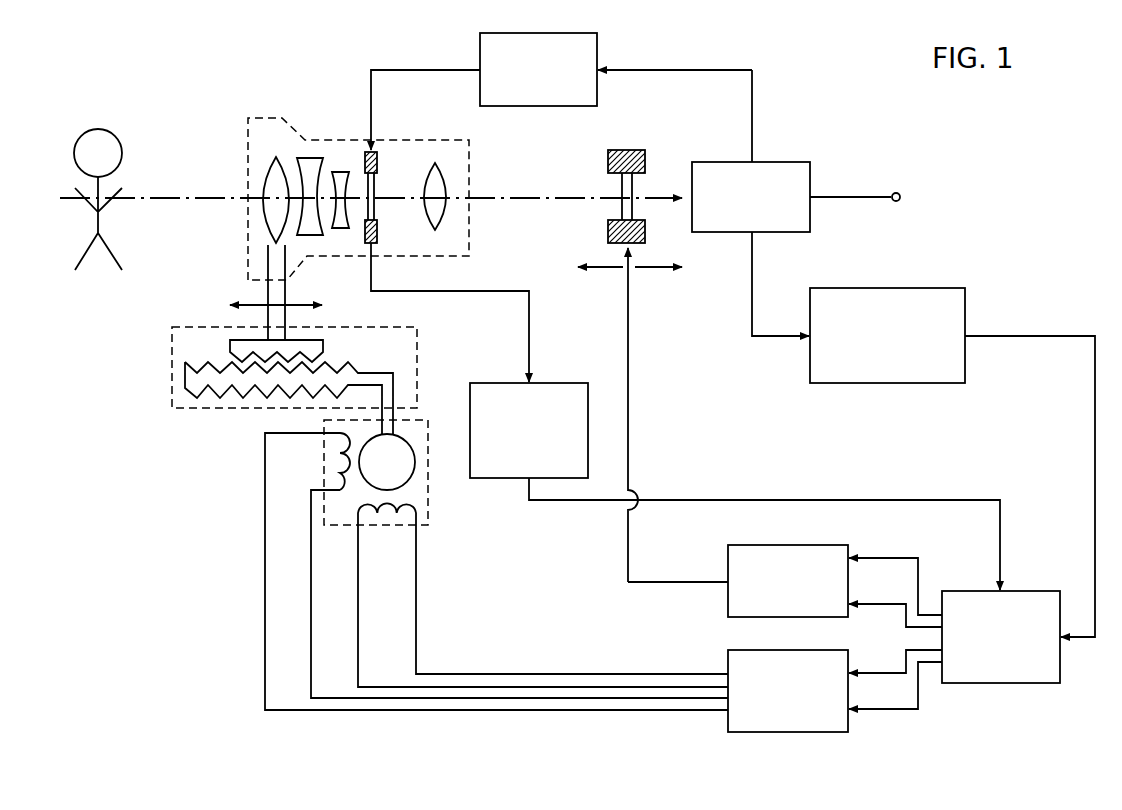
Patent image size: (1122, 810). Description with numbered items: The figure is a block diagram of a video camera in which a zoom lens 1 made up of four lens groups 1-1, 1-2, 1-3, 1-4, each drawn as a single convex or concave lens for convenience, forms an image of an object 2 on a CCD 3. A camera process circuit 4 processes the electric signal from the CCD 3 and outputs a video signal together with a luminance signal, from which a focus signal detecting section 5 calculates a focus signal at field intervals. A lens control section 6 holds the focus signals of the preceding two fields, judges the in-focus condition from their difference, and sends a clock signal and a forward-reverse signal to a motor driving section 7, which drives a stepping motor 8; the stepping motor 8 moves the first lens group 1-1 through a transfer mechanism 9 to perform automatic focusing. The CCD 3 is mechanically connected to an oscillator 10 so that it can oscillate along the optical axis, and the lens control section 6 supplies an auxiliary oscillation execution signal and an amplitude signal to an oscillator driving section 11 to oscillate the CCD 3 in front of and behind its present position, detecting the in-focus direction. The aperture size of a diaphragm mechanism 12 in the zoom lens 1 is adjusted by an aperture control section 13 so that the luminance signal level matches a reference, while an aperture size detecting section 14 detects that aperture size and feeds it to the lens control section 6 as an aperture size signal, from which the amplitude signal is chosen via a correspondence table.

The zoom lens 1 is at (252, 118).
The first lens group 1-1 is at (275, 157).
The second lens group 1-2 is at (309, 158).
The third lens group 1-3 is at (340, 172).
The fourth lens group 1-4 is at (440, 177).
The object 2 is at (102, 141).
The CCD 3 is at (622, 190).
The camera process circuit 4 is at (758, 162).
The focus signal detecting section 5 is at (897, 288).
The lens control section 6 is at (1013, 592).
The motor driving section 7 is at (790, 650).
The stepping motor 8 is at (428, 418).
The transfer mechanism 9 is at (360, 327).
The oscillator 10 is at (625, 150).
The oscillator driving section 11 is at (795, 545).
The diaphragm mechanism 12 is at (378, 165).
The aperture control section 13 is at (584, 33).
The aperture size detecting section 14 is at (518, 383).